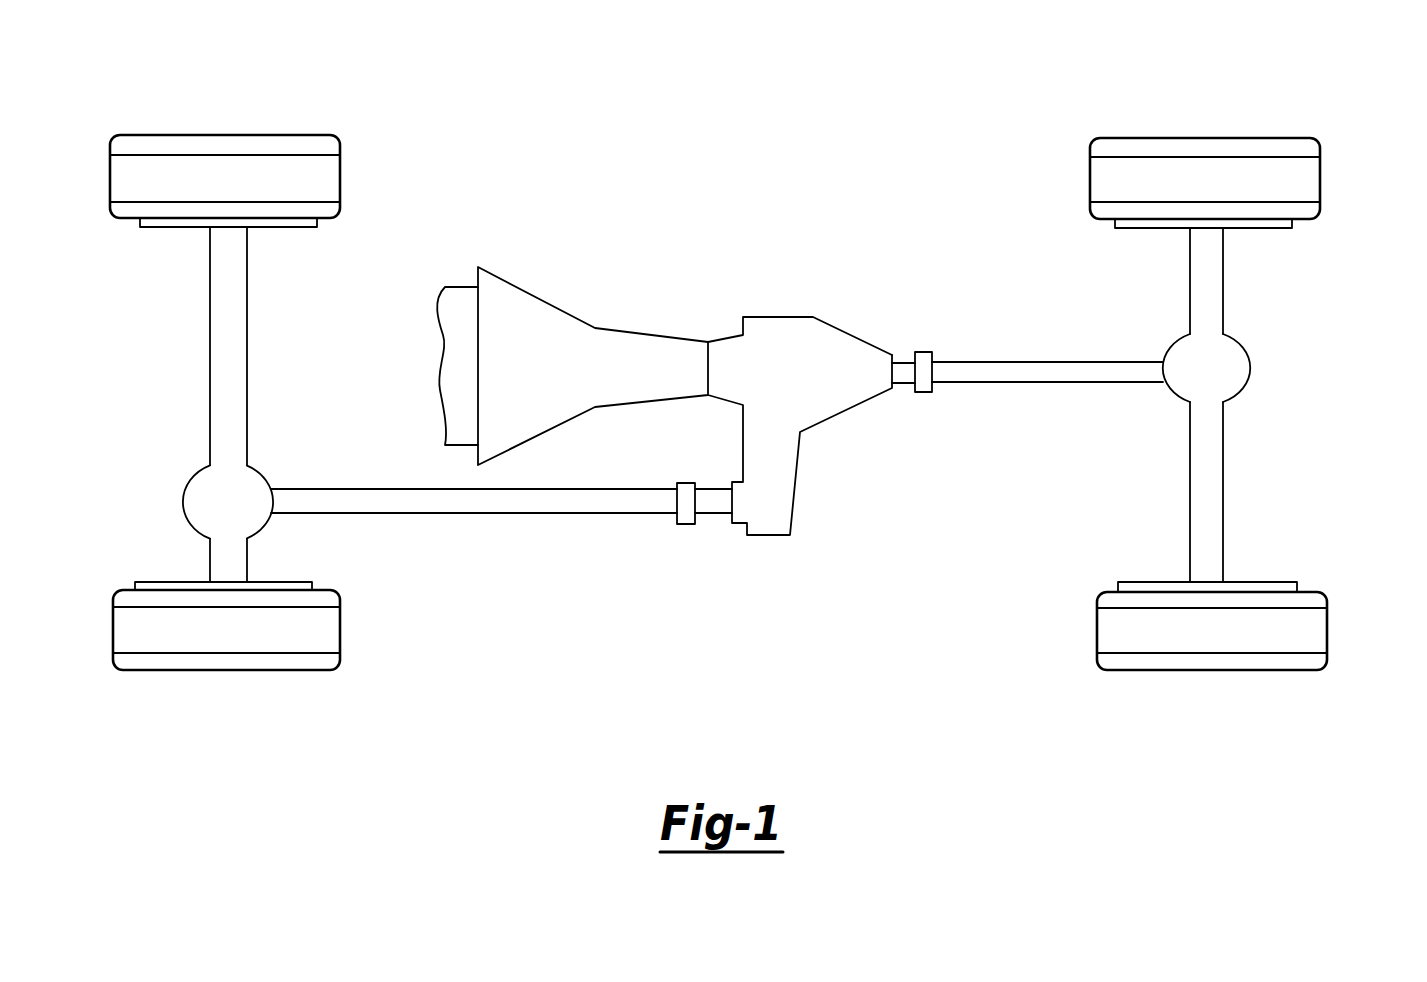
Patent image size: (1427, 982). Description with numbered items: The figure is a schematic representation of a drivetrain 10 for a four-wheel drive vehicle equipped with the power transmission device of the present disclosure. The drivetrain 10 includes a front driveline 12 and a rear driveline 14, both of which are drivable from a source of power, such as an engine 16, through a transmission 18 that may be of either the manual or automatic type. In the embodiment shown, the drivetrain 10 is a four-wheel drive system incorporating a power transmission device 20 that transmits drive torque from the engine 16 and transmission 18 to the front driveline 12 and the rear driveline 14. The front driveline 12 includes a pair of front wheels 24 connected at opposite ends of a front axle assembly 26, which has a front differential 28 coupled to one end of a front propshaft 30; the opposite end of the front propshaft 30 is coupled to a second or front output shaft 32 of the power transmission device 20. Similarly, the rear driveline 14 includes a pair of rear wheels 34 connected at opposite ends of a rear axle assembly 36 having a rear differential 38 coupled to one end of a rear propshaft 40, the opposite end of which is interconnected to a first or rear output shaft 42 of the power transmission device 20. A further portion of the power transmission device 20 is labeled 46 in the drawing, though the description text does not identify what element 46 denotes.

The drivetrain 10 is at (1352, 126).
The front driveline 12 is at (270, 405).
The rear driveline 14 is at (1118, 340).
The engine 16 is at (460, 336).
The transmission 18 is at (647, 378).
The power transmission device 20 is at (850, 412).
The front wheels 24 is at (198, 170).
The front axle assembly 26 is at (226, 305).
The front differential 28 is at (200, 496).
The front propshaft 30 is at (588, 500).
The front output shaft 32 is at (712, 502).
The rear wheels 34 is at (1180, 177).
The rear axle assembly 36 is at (1210, 268).
The rear differential 38 is at (1235, 378).
The rear propshaft 40 is at (1125, 370).
The rear output shaft 42 is at (903, 352).
The transfer case 46 is at (784, 316).